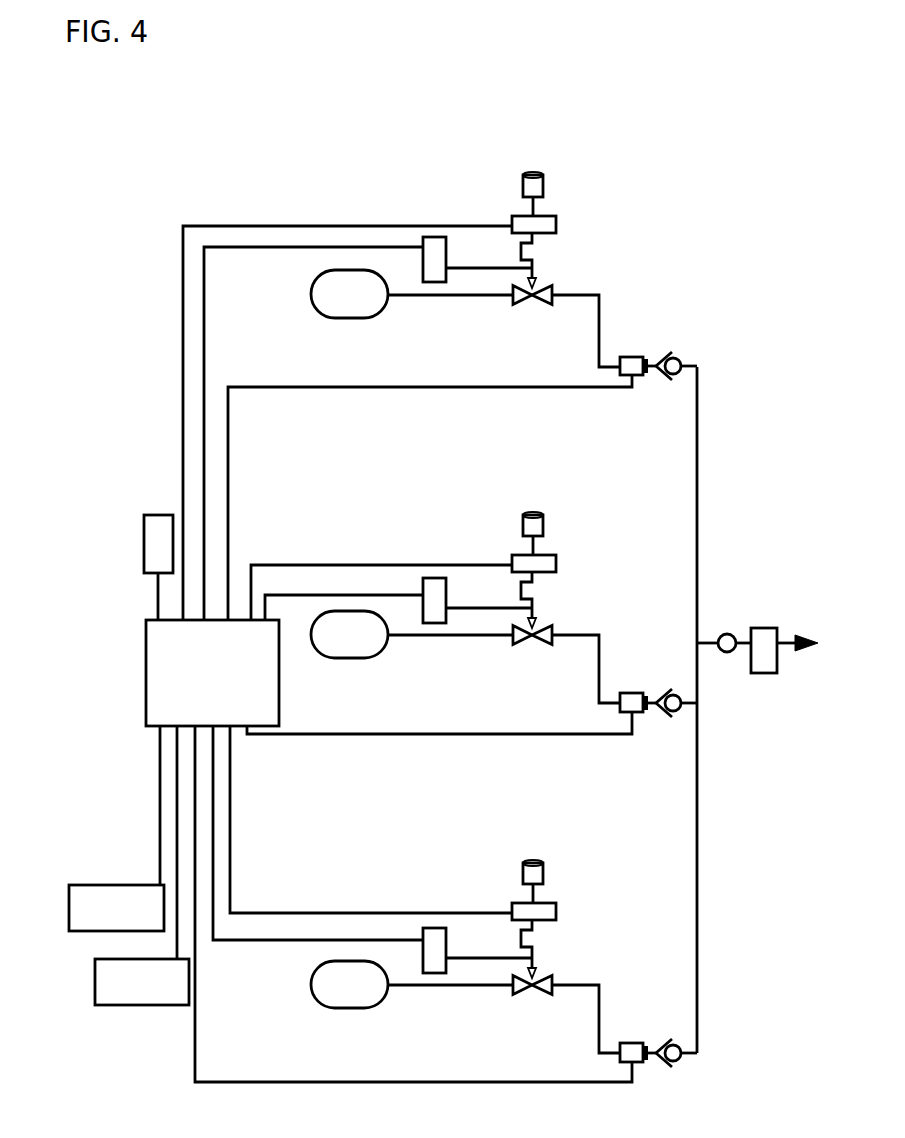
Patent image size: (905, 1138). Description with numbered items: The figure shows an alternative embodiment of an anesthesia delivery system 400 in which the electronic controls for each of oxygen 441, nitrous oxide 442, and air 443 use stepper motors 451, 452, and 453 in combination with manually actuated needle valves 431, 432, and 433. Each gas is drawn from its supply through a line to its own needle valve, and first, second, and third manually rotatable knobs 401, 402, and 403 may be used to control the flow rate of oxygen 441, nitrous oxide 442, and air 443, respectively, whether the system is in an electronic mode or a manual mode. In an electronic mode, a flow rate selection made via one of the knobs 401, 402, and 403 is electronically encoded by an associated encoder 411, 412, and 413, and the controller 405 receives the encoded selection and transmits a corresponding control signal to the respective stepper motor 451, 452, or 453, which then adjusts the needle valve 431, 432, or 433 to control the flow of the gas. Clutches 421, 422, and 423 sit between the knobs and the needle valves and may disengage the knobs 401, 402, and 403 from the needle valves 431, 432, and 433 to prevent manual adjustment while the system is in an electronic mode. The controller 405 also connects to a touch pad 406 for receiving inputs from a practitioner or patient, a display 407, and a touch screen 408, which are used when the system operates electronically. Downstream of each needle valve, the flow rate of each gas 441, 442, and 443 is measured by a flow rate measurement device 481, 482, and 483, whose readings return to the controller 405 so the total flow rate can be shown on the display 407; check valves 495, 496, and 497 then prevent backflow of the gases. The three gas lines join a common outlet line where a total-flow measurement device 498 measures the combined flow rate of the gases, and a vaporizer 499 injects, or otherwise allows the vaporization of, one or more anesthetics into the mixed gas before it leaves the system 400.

The anesthesia delivery system 400 is at (783, 44).
The first manually rotatable knob 401 is at (543, 172).
The second manually rotatable knob 402 is at (540, 512).
The third manually rotatable knob 403 is at (540, 860).
The controller 405 is at (146, 670).
The touch pad 406 is at (158, 514).
The display 407 is at (105, 884).
The touch screen 408 is at (125, 1005).
The encoder 411 is at (556, 217).
The encoder 412 is at (556, 555).
The encoder 413 is at (556, 903).
The clutch 421 is at (535, 252).
The clutch 422 is at (535, 590).
The clutch 423 is at (535, 938).
The needle valve 431 is at (548, 289).
The needle valve 432 is at (548, 628).
The needle valve 433 is at (548, 978).
The oxygen 441 is at (330, 318).
The nitrous oxide 442 is at (364, 657).
The air 443 is at (366, 1008).
The stepper motor 451 is at (435, 236).
The stepper motor 452 is at (435, 577).
The stepper motor 453 is at (435, 927).
The flow rate measurement device 481 is at (630, 356).
The flow rate measurement device 482 is at (630, 692).
The flow rate measurement device 483 is at (630, 1042).
The check valve 495 is at (680, 357).
The check valve 496 is at (680, 714).
The check valve 497 is at (680, 1063).
The total-flow measurement device 498 is at (732, 634).
The vaporizer 499 is at (768, 673).